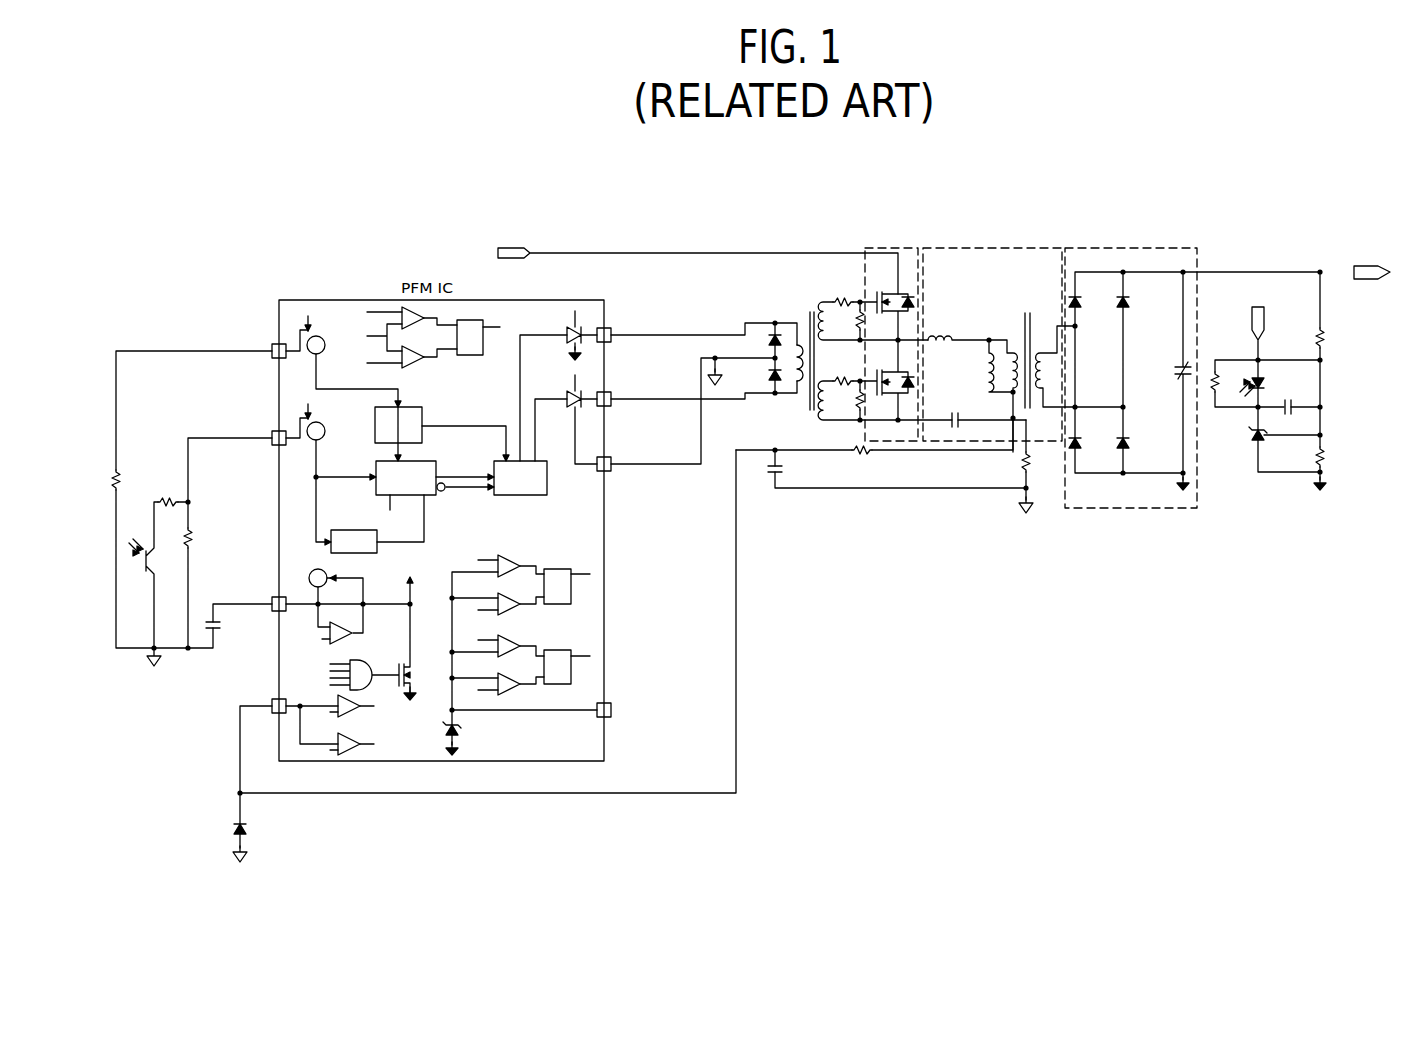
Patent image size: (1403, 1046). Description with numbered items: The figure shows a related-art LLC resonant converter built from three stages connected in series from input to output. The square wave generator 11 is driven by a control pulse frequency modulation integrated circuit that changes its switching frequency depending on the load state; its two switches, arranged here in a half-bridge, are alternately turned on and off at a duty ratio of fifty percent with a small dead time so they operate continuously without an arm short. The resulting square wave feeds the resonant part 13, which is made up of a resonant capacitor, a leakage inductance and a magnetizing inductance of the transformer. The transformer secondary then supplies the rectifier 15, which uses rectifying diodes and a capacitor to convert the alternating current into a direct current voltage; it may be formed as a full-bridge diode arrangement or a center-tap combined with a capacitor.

The square wave generator 11 is at (892, 248).
The resonant part 13 is at (991, 248).
The rectifier 15 is at (1129, 248).